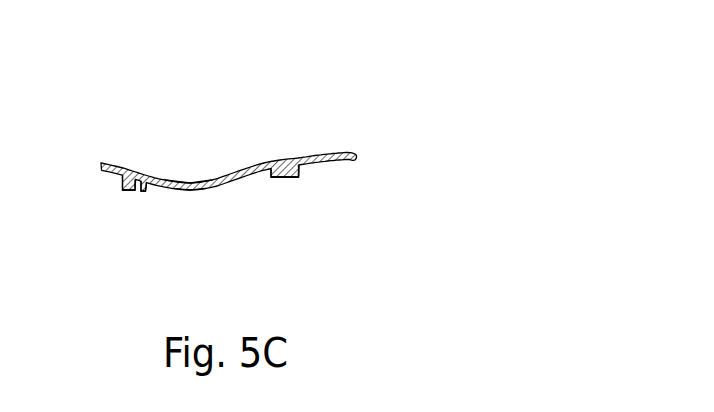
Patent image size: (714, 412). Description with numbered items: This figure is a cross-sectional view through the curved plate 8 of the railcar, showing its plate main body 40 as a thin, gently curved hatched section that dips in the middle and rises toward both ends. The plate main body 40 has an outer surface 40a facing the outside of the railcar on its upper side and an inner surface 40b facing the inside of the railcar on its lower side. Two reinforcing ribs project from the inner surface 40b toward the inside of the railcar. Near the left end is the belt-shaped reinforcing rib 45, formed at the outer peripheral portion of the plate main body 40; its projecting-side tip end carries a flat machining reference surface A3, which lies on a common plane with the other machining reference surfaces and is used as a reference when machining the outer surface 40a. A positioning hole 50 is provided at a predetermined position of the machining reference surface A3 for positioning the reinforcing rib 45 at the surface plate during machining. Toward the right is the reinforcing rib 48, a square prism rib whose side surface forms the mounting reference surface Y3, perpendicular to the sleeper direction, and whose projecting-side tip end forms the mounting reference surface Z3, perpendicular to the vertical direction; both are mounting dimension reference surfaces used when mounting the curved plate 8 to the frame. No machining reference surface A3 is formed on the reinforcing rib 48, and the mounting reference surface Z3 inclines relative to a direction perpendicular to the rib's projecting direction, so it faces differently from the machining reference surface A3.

The curved plate 8 is at (283, 122).
The plate main body 40 is at (240, 173).
The outer surface 40a is at (187, 182).
The inner surface 40b is at (192, 189).
The reinforcing rib 45 is at (120, 178).
The machining reference surface A3 is at (131, 190).
The positioning hole 50 is at (134, 192).
The reinforcing rib 48 is at (272, 178).
The mounting reference surface Z3 is at (289, 178).
The mounting reference surface Y3 is at (298, 172).